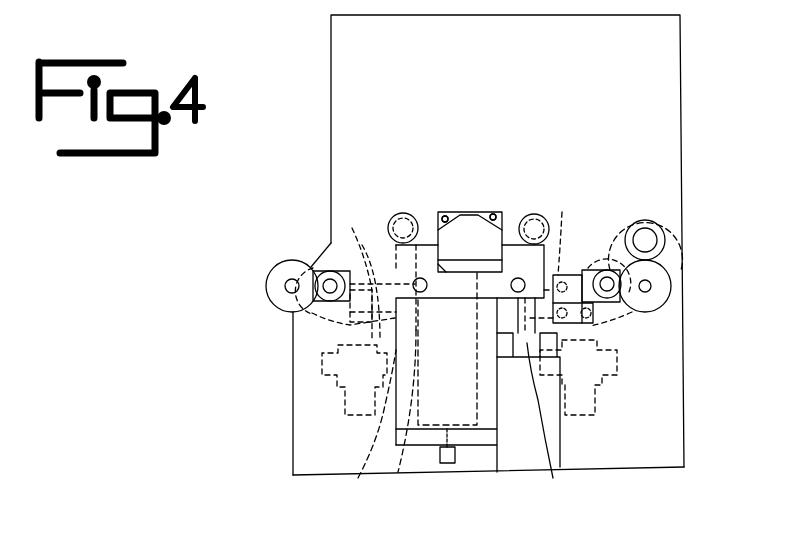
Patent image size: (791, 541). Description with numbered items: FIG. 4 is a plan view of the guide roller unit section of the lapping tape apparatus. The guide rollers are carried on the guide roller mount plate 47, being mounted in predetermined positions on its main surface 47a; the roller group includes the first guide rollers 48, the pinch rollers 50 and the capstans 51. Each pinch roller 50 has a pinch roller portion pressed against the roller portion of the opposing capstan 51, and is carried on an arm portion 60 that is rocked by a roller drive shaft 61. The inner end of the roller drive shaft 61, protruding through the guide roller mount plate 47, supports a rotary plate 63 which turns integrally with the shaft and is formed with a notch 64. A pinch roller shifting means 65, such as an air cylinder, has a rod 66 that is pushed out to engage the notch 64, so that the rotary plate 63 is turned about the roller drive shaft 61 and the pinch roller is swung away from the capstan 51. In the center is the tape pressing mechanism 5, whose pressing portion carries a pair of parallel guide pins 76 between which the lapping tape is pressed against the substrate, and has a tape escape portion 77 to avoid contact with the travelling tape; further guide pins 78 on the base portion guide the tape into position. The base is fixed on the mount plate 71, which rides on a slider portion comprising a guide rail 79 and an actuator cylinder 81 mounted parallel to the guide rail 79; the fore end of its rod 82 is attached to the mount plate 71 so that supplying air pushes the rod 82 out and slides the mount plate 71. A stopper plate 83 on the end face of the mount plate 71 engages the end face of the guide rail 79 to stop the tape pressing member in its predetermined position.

The tape pressing mechanism 5 is at (469, 225).
The guide roller mount plate 47 is at (668, 107).
The main surface 47a is at (667, 435).
The first guide rollers 48 is at (402, 225).
The pinch rollers 50 is at (273, 287).
The capstans 51 is at (648, 244).
The arm portion 60 is at (312, 313).
The roller drive shaft 61 is at (320, 272).
The rotary plate 63 is at (455, 265).
The notch 64 is at (571, 275).
The pinch roller shifting means 65 is at (323, 372).
The rod 66 is at (395, 318).
The mount plate 71 is at (485, 402).
The guide pins 76 is at (443, 216).
The tape escape portion 77 is at (410, 270).
The guide pins 78 is at (518, 293).
The guide rail 79 is at (399, 416).
The actuator cylinder 81 is at (527, 440).
The rod 82 is at (548, 423).
The stopper plate 83 is at (429, 440).